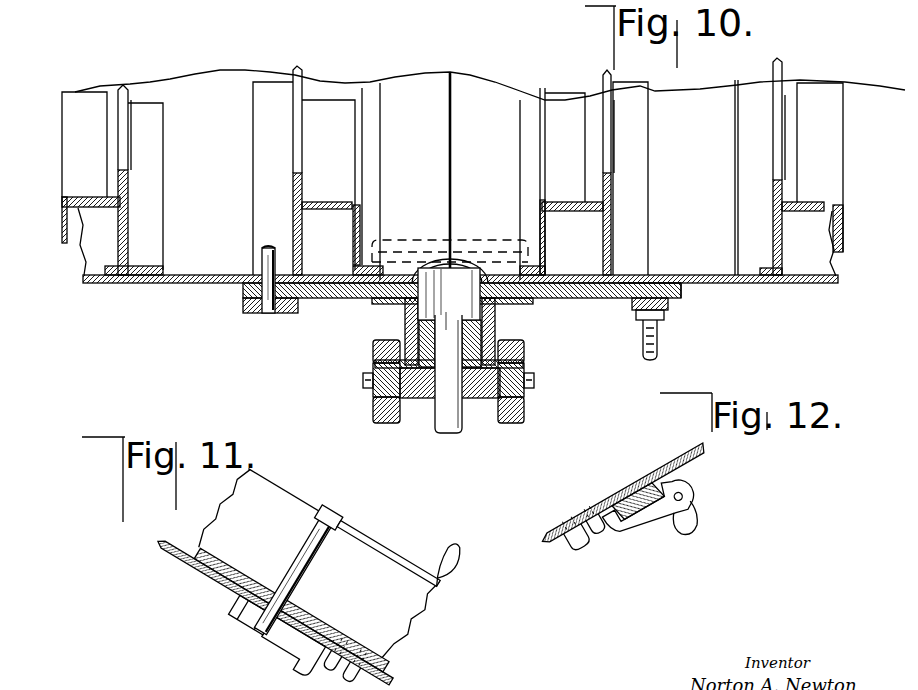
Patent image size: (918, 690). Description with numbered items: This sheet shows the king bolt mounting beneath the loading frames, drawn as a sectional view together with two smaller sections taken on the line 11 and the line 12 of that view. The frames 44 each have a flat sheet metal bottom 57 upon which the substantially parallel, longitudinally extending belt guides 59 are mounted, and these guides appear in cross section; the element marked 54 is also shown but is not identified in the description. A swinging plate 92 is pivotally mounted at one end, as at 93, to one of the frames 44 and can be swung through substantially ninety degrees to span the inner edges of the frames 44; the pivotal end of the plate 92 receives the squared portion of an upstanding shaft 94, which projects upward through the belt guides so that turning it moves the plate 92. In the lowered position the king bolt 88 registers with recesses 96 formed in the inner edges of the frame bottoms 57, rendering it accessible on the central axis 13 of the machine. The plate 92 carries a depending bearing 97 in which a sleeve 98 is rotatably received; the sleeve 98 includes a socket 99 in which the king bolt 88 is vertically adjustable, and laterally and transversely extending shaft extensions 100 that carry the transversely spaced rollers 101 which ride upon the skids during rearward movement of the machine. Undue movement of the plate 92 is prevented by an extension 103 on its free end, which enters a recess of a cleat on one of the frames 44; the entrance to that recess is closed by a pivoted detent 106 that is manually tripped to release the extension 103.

The section line 11— 11 is at (241, 343).
The section line 12— 12 is at (658, 368).
The axis of rotation 13 is at (488, 177).
The frames 44 is at (704, 284).
The base plate 54 is at (196, 284).
The frame bottom 57 is at (693, 182).
The belt guides 59 is at (355, 232).
The king bolt 88 is at (462, 428).
The swinging plate 92 is at (350, 299).
The pivotal mounting 93 is at (266, 314).
The upstanding shaft 94 is at (268, 247).
The recesses 96 is at (437, 270).
The depending bearing 97 is at (500, 312).
The sleeve 98 is at (496, 342).
The socket 99 is at (425, 400).
The shaft extensions 100 is at (531, 372).
The rollers 101 is at (373, 351).
The extension 103 is at (676, 304).
The pivoted detent 106 is at (660, 340).